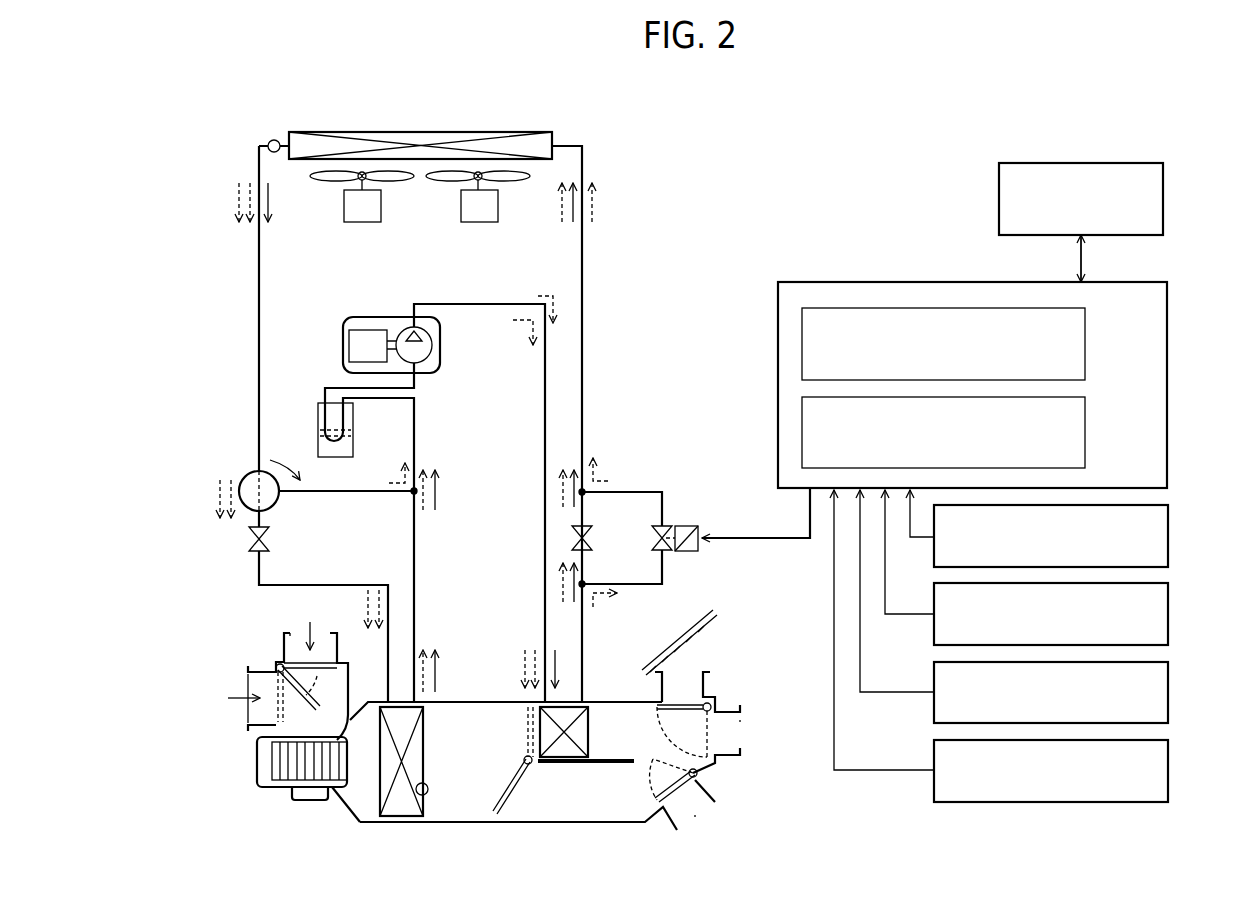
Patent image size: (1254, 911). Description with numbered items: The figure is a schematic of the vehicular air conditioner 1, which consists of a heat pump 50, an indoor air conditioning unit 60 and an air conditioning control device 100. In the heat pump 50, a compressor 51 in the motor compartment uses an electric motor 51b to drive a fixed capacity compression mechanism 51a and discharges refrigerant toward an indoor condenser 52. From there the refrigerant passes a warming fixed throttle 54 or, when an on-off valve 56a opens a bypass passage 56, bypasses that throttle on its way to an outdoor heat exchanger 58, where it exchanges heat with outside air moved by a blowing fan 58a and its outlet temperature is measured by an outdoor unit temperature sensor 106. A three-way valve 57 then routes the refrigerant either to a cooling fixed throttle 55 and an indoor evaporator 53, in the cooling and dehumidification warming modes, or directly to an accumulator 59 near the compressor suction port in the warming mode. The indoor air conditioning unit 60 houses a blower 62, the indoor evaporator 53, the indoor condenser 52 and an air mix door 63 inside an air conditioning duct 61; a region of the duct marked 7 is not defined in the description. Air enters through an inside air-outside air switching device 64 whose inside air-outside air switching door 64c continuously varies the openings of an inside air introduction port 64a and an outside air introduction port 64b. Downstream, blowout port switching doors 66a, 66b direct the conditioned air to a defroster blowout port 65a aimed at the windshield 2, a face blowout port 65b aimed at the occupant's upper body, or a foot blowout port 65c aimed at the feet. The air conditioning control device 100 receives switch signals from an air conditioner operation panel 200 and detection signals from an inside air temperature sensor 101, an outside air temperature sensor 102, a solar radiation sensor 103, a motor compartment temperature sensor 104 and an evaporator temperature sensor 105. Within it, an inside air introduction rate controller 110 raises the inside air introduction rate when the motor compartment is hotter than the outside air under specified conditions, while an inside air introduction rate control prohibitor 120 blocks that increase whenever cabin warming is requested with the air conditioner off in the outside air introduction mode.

The vehicular air conditioner 1 is at (652, 148).
The windshield 2 is at (676, 634).
The air passage 7 is at (482, 702).
The heat pump 50 is at (592, 278).
The compressor 51 is at (373, 317).
The fixed capacity compression mechanism 51a is at (432, 345).
The electric motor 51b is at (343, 345).
The indoor condenser 52 is at (588, 733).
The indoor evaporator 53 is at (423, 752).
The warming fixed throttle 54 is at (592, 540).
The cooling fixed throttle 55 is at (268, 542).
The bypass passage 56 is at (636, 492).
The on-off valve 56a is at (685, 526).
The three-way valve 57 is at (250, 479).
The outdoor heat exchanger 58 is at (497, 132).
The blowing fan 58a is at (399, 180).
The accumulator 59 is at (353, 425).
The indoor air conditioning unit 60 is at (568, 823).
The air conditioning duct 61 is at (455, 823).
The blower 62 is at (308, 801).
The air mix door 63 is at (520, 785).
The inside air-outside air switching device 64 is at (267, 662).
The inside air introduction port 64a is at (300, 648).
The outside air introduction port 64b is at (258, 710).
The inside air-outside air switching door 64c is at (306, 702).
The defroster blowout port 65a is at (680, 680).
The face blowout port 65b is at (727, 733).
The foot blowout port 65c is at (693, 810).
The blowout port switching door 66a is at (687, 700).
The blowout port switching door 66b is at (667, 815).
The air conditioning control device 100 is at (857, 282).
The inside air temperature sensor 101 is at (1168, 535).
The outside air temperature sensor 102 is at (1168, 617).
The solar radiation sensor 103 is at (1168, 694).
The motor compartment temperature sensor 104 is at (1168, 772).
The evaporator temperature sensor 105 is at (428, 788).
The outdoor unit temperature sensor 106 is at (270, 141).
The inside air introduction rate controller 110 is at (1085, 340).
The inside air introduction rate control prohibitor 120 is at (1085, 430).
The air conditioner operation panel 200 is at (1092, 163).